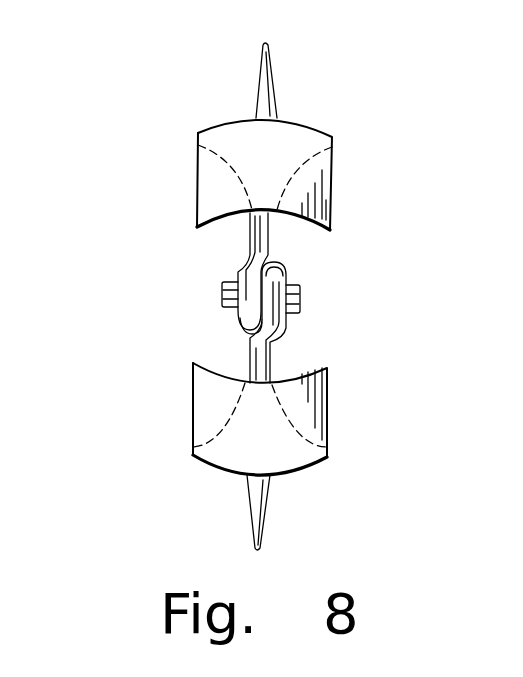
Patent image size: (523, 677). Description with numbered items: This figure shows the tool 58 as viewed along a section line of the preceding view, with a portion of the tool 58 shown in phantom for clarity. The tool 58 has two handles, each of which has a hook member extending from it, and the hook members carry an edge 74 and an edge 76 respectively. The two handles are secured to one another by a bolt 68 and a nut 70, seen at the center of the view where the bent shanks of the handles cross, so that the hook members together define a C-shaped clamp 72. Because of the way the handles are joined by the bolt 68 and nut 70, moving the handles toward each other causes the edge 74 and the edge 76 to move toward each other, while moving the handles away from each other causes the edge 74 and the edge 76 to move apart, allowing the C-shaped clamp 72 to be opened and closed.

The tool 58 is at (117, 103).
The C-shaped clamp 72 is at (420, 156).
The edge 74 is at (208, 222).
The edge 76 is at (320, 373).
The bolt 68 is at (220, 293).
The nut 70 is at (302, 300).